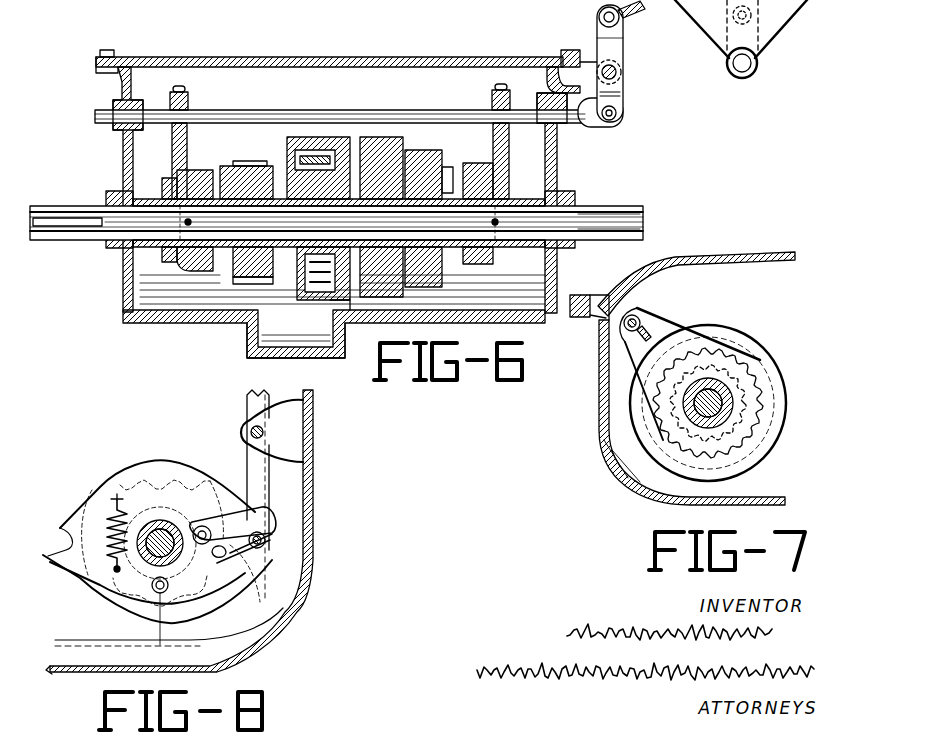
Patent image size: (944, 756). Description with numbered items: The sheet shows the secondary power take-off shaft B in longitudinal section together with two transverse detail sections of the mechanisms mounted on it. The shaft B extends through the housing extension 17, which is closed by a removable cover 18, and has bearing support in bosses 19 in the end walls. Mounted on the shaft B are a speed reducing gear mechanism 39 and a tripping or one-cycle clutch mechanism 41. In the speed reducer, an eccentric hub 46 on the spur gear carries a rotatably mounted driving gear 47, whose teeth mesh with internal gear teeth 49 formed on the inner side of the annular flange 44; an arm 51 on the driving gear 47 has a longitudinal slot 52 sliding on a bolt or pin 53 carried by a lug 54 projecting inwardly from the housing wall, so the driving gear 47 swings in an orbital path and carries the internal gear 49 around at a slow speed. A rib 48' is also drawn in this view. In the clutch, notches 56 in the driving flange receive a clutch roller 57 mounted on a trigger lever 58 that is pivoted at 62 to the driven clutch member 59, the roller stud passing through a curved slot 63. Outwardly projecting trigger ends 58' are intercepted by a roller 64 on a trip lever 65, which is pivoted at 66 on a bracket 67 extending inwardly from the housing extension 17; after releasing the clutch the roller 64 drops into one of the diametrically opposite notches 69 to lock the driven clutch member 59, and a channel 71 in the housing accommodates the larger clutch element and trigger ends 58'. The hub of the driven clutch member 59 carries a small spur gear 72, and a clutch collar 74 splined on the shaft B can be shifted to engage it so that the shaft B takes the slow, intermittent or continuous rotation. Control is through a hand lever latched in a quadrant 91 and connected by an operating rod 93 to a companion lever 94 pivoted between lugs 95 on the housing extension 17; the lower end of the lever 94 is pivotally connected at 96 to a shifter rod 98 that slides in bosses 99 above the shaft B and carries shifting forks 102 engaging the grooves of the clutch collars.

In FIG. 6, the housing extension 17 is at (123, 317).
In FIG. 7, the housing extension 17 is at (605, 392).
In FIG. 8, the housing extension 17 is at (313, 498).
In FIG. 6, the removable cover 18 is at (296, 57).
In FIG. 6, the bosses 19 is at (112, 250).
In FIG. 6, the speed reducing gear mechanism 39 is at (362, 145).
In FIG. 7, the speed reducing gear mechanism 39 is at (748, 333).
In FIG. 6, the tripping or one-cycle clutch mechanism 41 is at (344, 300).
In FIG. 8, the tripping or one-cycle clutch mechanism 41 is at (122, 466).
In FIG. 7, the annular flange 44 is at (656, 422).
In FIG. 7, the eccentric hub 46 is at (733, 398).
In FIG. 7, the driving gear 47 is at (786, 420).
In FIG. 7, the rib 48' is at (619, 475).
In FIG. 7, the internal gear teeth 49 is at (644, 450).
In FIG. 7, the arm 51 is at (680, 344).
In FIG. 7, the longitudinal slot 52 is at (647, 329).
In FIG. 7, the bolt or pin 53 is at (634, 314).
In FIG. 7, the lug 54 is at (614, 345).
In FIG. 8, the notches 56 is at (160, 528).
In FIG. 8, the clutch roller 57 is at (205, 526).
In FIG. 8, the trigger lever 58 is at (147, 590).
In FIG. 8, the trigger ends 58' is at (173, 547).
In FIG. 8, the driven clutch member 59 is at (120, 612).
In FIG. 8, the pivot 62 is at (157, 624).
In FIG. 8, the slot 63 is at (220, 560).
In FIG. 8, the roller 64 is at (265, 538).
In FIG. 8, the trip lever 65 is at (269, 470).
In FIG. 8, the pivot 66 is at (251, 432).
In FIG. 8, the bracket 67 is at (290, 425).
In FIG. 8, the notches 69 is at (62, 540).
In FIG. 6, the channel 71 is at (252, 340).
In FIG. 8, the channel 71 is at (290, 596).
In FIG. 6, the spur gear 72 is at (246, 254).
In FIG. 6, the clutch collar 74 is at (198, 266).
In FIG. 6, the latching quadrant 91 is at (782, 18).
In FIG. 6, the operating rods or links 93 is at (158, 196).
In FIG. 6, the companion lever 94 is at (620, 48).
In FIG. 6, the lugs 95 is at (591, 63).
In FIG. 6, the pivotal connection 96 is at (622, 118).
In FIG. 6, the shifter rod 98 is at (414, 110).
In FIG. 6, the bosses 99 is at (114, 106).
In FIG. 6, the shifting forks 102 is at (188, 146).
In FIG. 6, the secondary power take-off shaft B is at (643, 206).
In FIG. 7, the secondary power take-off shaft B is at (718, 393).